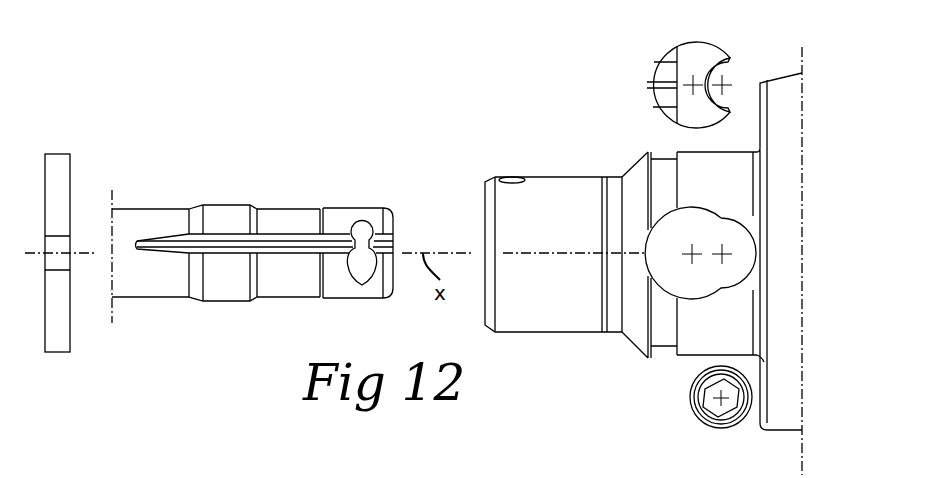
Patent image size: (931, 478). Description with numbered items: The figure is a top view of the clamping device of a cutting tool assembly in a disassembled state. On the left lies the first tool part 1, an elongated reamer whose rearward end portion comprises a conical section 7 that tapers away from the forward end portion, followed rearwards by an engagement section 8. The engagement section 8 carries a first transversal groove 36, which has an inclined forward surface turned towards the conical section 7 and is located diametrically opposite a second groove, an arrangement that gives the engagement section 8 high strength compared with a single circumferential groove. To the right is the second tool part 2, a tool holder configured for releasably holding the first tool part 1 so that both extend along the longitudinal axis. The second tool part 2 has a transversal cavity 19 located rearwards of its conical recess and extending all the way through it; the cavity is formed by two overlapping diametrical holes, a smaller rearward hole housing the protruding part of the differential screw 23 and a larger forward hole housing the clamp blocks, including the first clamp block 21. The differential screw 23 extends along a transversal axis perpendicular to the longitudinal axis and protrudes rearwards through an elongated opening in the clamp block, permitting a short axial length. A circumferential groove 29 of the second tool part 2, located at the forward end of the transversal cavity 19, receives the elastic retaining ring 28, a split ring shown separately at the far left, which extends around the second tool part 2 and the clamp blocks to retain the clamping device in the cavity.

The first tool part 1 is at (171, 163).
The second tool part 2 is at (591, 85).
The conical section 7 is at (221, 214).
The engagement section 8 is at (380, 218).
The transversal cavity 19 is at (696, 296).
The first clamp block 21 is at (693, 52).
The differential screw 23 is at (713, 408).
The elastic retaining ring 28 is at (62, 185).
The circumferential groove 29 is at (662, 163).
The first transversal groove 36 is at (363, 275).